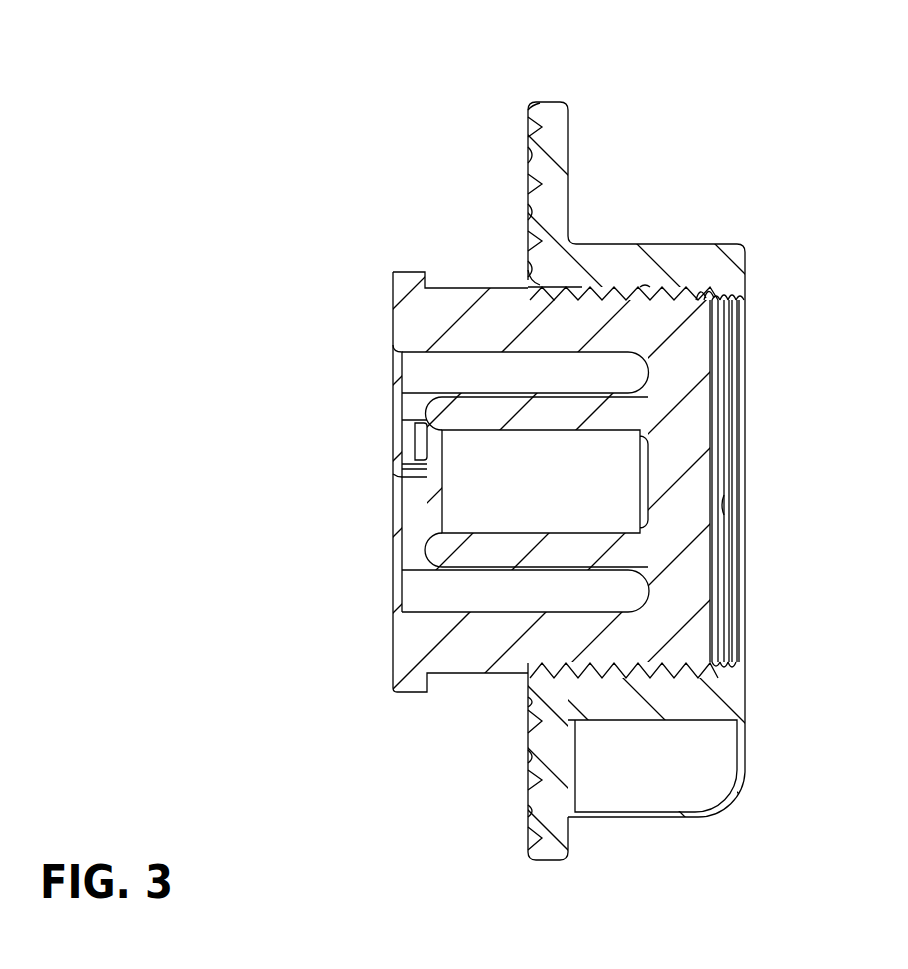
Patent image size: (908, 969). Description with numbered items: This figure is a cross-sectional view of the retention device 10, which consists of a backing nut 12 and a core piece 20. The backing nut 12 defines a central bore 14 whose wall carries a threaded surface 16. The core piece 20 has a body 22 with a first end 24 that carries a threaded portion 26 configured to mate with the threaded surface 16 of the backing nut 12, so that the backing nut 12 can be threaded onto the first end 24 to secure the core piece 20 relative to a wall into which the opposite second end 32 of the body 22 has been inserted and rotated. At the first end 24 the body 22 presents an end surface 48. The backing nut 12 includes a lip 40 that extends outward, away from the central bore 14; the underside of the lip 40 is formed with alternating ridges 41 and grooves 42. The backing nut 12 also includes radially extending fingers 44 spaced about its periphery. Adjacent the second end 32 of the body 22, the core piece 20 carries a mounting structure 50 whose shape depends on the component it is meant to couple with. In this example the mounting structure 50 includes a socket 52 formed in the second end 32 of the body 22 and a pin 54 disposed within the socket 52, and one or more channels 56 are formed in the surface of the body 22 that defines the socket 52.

The retention device 10 is at (749, 206).
The backing nut 12 is at (760, 270).
The central bore 14 is at (728, 505).
The threaded surface 16 is at (727, 322).
The core piece 20 is at (405, 709).
The body 22 is at (530, 310).
The first end 24 is at (701, 290).
The threaded portion 26 is at (632, 290).
The second end 32 is at (402, 316).
The lip 40 is at (568, 125).
The ridges 41 is at (527, 165).
The grooves 42 is at (527, 148).
The radially extending fingers 44 is at (733, 792).
The end surface 48 is at (720, 408).
The mounting structure 50 is at (431, 566).
The socket 52 is at (462, 369).
The pin 54 is at (437, 518).
The channels 56 is at (412, 440).